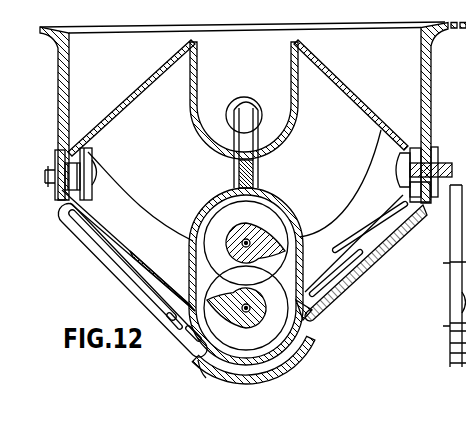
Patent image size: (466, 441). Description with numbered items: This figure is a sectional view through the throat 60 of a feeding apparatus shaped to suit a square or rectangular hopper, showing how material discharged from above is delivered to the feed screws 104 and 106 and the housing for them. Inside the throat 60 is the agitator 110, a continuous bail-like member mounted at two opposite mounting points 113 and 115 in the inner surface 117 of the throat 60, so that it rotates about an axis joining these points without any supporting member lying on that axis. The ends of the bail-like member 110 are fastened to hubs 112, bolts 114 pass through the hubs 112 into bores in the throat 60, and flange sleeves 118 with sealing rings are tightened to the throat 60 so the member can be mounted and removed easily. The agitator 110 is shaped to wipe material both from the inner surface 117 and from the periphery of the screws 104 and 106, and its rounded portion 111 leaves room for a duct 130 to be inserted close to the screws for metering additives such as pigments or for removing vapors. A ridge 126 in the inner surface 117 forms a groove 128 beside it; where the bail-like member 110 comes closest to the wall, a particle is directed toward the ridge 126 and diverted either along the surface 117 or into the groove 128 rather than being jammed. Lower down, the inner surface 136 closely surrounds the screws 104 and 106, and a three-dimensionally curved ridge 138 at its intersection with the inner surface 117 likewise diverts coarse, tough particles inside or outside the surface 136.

The throat 60 is at (70, 58).
The feed screw 104 is at (281, 210).
The feed screw 106 is at (287, 350).
The agitator 110 is at (324, 70).
The rounded portion 111 is at (297, 122).
The hub 112 is at (90, 157).
The mounting point 113 is at (72, 204).
The bolt 114 is at (97, 173).
The mounting point 115 is at (410, 228).
The inner surface 117 is at (117, 243).
The flange sleeve 118 is at (433, 151).
The ridge 126 is at (413, 147).
The groove 128 is at (74, 153).
The duct 130 is at (237, 106).
The inner surface 136 is at (213, 374).
The ridge 138 is at (313, 313).